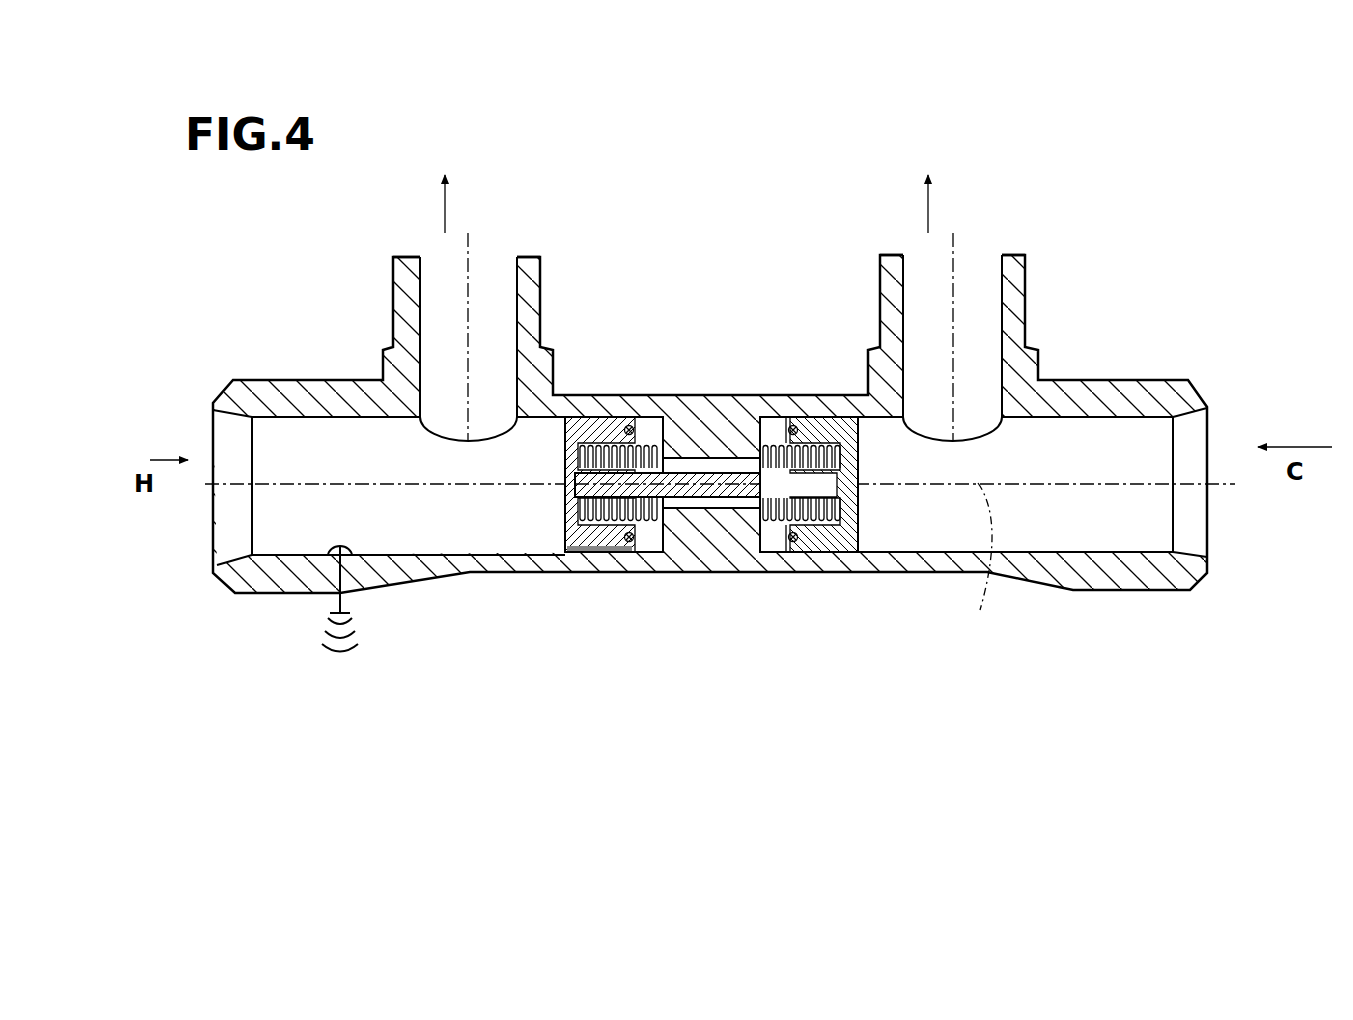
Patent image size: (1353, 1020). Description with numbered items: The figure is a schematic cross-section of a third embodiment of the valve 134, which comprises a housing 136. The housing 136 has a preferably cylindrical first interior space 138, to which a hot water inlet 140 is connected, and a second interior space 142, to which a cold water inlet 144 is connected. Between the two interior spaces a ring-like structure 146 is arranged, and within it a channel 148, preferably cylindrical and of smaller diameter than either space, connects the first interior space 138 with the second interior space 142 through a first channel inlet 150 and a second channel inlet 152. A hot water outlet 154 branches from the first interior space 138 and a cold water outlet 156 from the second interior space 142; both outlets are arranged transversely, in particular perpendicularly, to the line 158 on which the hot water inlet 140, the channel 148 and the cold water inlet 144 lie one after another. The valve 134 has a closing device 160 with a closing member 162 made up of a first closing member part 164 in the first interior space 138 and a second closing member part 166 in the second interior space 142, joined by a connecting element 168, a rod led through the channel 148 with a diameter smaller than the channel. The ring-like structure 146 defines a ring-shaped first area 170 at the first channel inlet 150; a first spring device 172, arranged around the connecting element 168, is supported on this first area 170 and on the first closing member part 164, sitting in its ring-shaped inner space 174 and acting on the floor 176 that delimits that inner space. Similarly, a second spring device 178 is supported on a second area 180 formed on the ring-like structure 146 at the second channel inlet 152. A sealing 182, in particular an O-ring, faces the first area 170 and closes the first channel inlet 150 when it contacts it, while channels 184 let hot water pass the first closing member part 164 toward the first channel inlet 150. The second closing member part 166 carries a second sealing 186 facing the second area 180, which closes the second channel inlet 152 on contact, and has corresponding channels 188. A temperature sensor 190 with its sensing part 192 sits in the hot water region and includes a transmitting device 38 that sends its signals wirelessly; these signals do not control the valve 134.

The valve 134 is at (783, 167).
The housing 136 is at (729, 562).
The first interior space 138 is at (425, 528).
The hot water inlet 140 is at (224, 540).
The second interior space 142 is at (1083, 523).
The cold water inlet 144 is at (1193, 523).
The ring-like structure 146 is at (692, 420).
The channel 148 is at (683, 525).
The first channel inlet 150 is at (653, 418).
The second channel inlet 152 is at (763, 420).
The hot water outlet 154 is at (493, 257).
The cold water outlet 156 is at (983, 255).
The line 158 is at (980, 610).
The closing device 160 is at (615, 577).
The closing member 162 is at (608, 415).
The first closing member part 164 is at (583, 418).
The second closing member part 166 is at (862, 422).
The connecting element 168 is at (748, 553).
The first area 170 is at (655, 537).
The first spring device 172 is at (578, 520).
The ring-shaped inner space 174 is at (576, 485).
The floor 176 is at (576, 447).
The second spring device 178 is at (862, 510).
The second area 180 is at (772, 431).
The sealing 182 is at (631, 424).
The channels 184 is at (580, 553).
The second sealing 186 is at (817, 553).
The channels 188 is at (826, 423).
The temperature sensor 190 is at (332, 550).
The sensing part 192 is at (357, 542).
The transmitting device 38 is at (340, 656).